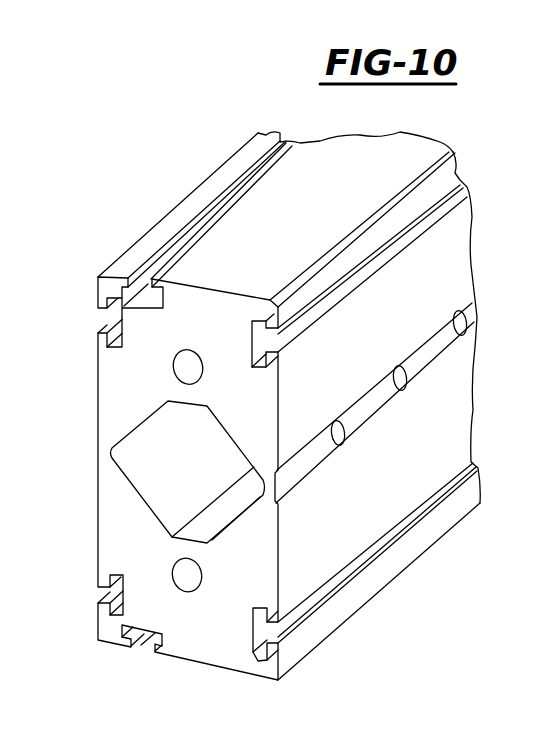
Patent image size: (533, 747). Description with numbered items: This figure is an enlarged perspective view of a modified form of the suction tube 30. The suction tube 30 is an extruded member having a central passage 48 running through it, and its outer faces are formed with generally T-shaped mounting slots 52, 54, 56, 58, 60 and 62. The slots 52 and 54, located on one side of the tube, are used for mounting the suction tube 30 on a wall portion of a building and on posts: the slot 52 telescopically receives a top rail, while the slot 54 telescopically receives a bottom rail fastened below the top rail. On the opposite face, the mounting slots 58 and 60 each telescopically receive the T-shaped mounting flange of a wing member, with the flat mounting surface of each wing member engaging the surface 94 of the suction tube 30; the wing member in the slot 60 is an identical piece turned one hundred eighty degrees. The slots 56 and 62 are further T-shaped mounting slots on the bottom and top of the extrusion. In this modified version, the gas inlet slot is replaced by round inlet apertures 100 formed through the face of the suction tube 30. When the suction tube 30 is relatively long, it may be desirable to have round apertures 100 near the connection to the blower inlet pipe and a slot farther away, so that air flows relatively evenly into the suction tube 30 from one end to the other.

The suction tube 30 is at (130, 215).
The central passage 48 is at (138, 478).
The mounting slot 52 is at (100, 310).
The mounting slot 54 is at (103, 583).
The mounting slot 56 is at (152, 633).
The mounting slot 58 is at (258, 632).
The mounting slot 60 is at (258, 348).
The mounting slot 62 is at (272, 158).
The surface 94 is at (316, 578).
The round inlet apertures 100 is at (453, 326).